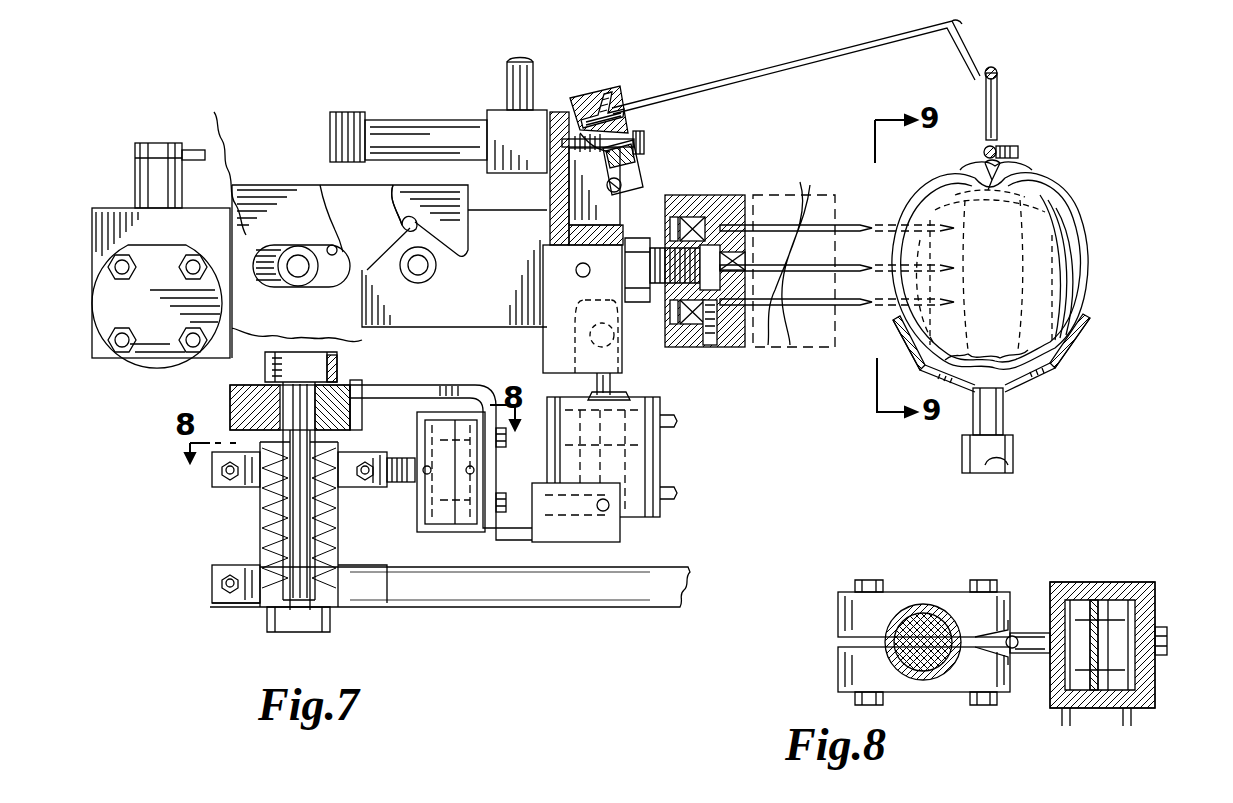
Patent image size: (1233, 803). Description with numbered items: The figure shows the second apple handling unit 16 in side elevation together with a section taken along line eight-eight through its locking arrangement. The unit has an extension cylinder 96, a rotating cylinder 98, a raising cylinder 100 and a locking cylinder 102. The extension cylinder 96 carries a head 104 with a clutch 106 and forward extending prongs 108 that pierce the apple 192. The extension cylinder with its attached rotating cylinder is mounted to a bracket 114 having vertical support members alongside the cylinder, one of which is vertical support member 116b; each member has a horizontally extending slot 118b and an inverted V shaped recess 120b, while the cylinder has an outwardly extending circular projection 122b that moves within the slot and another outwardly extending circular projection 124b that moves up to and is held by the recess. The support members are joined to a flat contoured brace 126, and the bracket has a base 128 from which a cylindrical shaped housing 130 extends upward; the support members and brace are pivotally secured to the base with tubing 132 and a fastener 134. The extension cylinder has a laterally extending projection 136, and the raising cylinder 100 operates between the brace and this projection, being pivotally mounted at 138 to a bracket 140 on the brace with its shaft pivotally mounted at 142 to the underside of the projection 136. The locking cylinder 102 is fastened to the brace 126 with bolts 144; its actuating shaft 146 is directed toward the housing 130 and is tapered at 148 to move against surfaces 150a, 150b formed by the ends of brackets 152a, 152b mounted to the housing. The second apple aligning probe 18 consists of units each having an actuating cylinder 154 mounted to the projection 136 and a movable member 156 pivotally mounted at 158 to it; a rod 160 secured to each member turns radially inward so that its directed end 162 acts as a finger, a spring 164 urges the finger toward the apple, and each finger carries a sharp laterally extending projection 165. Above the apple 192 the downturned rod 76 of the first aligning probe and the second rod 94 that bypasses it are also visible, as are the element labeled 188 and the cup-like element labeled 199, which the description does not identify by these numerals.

In FIG. 7, the second apple handling unit 16 is at (300, 110).
In FIG. 7, the second apple aligning probe 18 is at (638, 85).
In FIG. 7, the radially extending rod 76 is at (998, 80).
In FIG. 7, the second rod 94 is at (1015, 148).
In FIG. 7, the extension cylinder 96 is at (540, 212).
In FIG. 7, the rotating cylinder 98 is at (108, 318).
In FIG. 7, the raising cylinder 100 is at (680, 450).
In FIG. 7, the locking cylinder 102 is at (415, 510).
In FIG. 8, the locking cylinder 102 is at (1100, 585).
In FIG. 7, the head 104 is at (745, 195).
In FIG. 7, the clutch 106 is at (690, 195).
In FIG. 7, the prongs 108 is at (800, 246).
In FIG. 7, the bracket 114 is at (222, 403).
In FIG. 7, the vertical support member 116b is at (262, 185).
In FIG. 7, the horizontally extending slot 118b is at (315, 205).
In FIG. 7, the inverted V shaped recess 120b is at (393, 185).
In FIG. 7, the outwardly extending circular projection 122b is at (214, 169).
In FIG. 7, the outwardly extending circular projection 124b is at (436, 268).
In FIG. 7, the flat contoured brace 126 is at (435, 383).
In FIG. 8, the flat contoured brace 126 is at (1155, 695).
In FIG. 7, the base 128 is at (555, 607).
In FIG. 7, the cylindrical shaped housing 130 is at (260, 505).
In FIG. 8, the cylindrical shaped housing 130 is at (912, 602).
In FIG. 7, the tubing 132 is at (280, 540).
In FIG. 7, the fastener 134 is at (300, 552).
In FIG. 7, the laterally extending projection 136 is at (543, 343).
In FIG. 7, the pivot mounting 138 is at (605, 510).
In FIG. 7, the bracket 140 is at (535, 520).
In FIG. 7, the pivot mounting 142 is at (620, 335).
In FIG. 7, the bolts 144 is at (506, 440).
In FIG. 8, the bolts 144 is at (1167, 628).
In FIG. 7, the actuating shaft 146 is at (405, 472).
In FIG. 8, the actuating shaft 146 is at (1052, 700).
In FIG. 8, the taper 148 is at (1018, 630).
In FIG. 8, the surface 150a is at (1008, 620).
In FIG. 8, the surface 150b is at (1010, 665).
In FIG. 7, the bracket 152a is at (299, 469).
In FIG. 8, the bracket 152a is at (838, 588).
In FIG. 7, the bracket 152b is at (299, 584).
In FIG. 8, the bracket 152b is at (838, 668).
In FIG. 7, the actuating cylinder 154 is at (432, 118).
In FIG. 7, the movable member 156 is at (582, 98).
In FIG. 7, the pivot mounting 158 is at (646, 183).
In FIG. 7, the rod 160 is at (830, 52).
In FIG. 7, the directed end 162 is at (985, 170).
In FIG. 7, the spring 164 is at (642, 164).
In FIG. 7, the sharp laterally extending projection 165 is at (978, 72).
In FIG. 7, the housing 188 is at (136, 175).
In FIG. 7, the apple 192 is at (1090, 256).
In FIG. 7, the cup 199 is at (1060, 362).